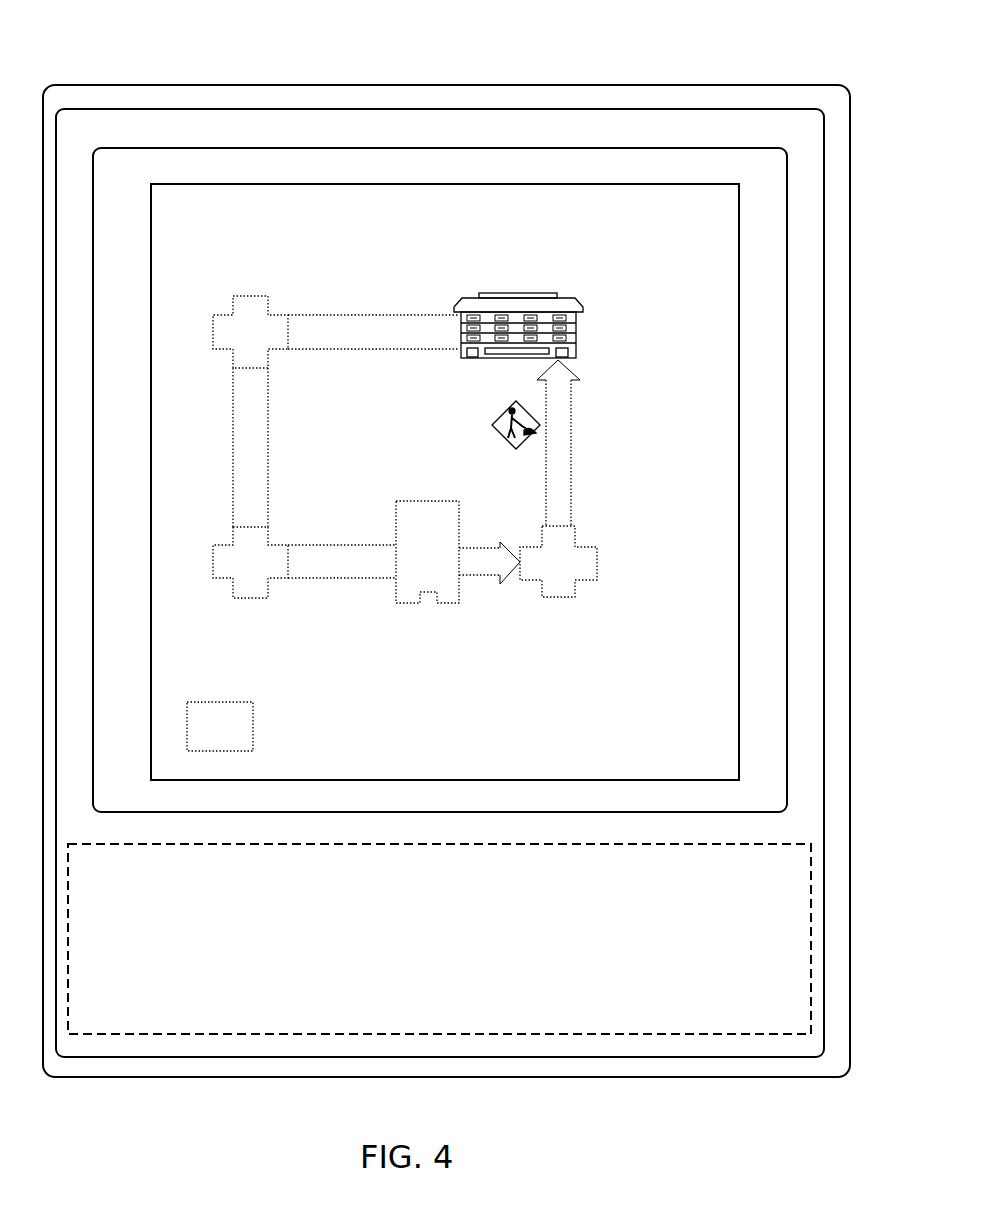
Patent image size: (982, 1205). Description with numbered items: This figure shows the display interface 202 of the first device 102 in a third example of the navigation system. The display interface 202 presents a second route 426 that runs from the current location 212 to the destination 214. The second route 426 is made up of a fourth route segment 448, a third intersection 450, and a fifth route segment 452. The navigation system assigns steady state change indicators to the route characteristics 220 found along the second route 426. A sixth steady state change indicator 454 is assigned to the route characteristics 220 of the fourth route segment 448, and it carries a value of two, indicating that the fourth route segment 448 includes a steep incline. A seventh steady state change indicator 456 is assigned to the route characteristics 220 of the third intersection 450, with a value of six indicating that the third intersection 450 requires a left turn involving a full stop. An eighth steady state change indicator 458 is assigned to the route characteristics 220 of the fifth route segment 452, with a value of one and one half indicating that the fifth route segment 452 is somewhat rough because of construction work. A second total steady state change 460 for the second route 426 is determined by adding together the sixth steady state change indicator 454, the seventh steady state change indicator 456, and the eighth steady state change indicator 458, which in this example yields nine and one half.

The first device 102 is at (262, 97).
The display interface 202 is at (433, 242).
The current location 212 is at (428, 595).
The destination 214 is at (541, 296).
The route characteristics 220 is at (497, 413).
The second route 426 is at (548, 565).
The fourth route segment 448 is at (510, 580).
The third intersection 450 is at (608, 551).
The fifth route segment 452 is at (634, 423).
The sixth steady state change indicator 454 is at (510, 563).
The seventh steady state change indicator 456 is at (548, 565).
The eighth steady state change indicator 458 is at (567, 475).
The second total steady state change 460 is at (220, 726).